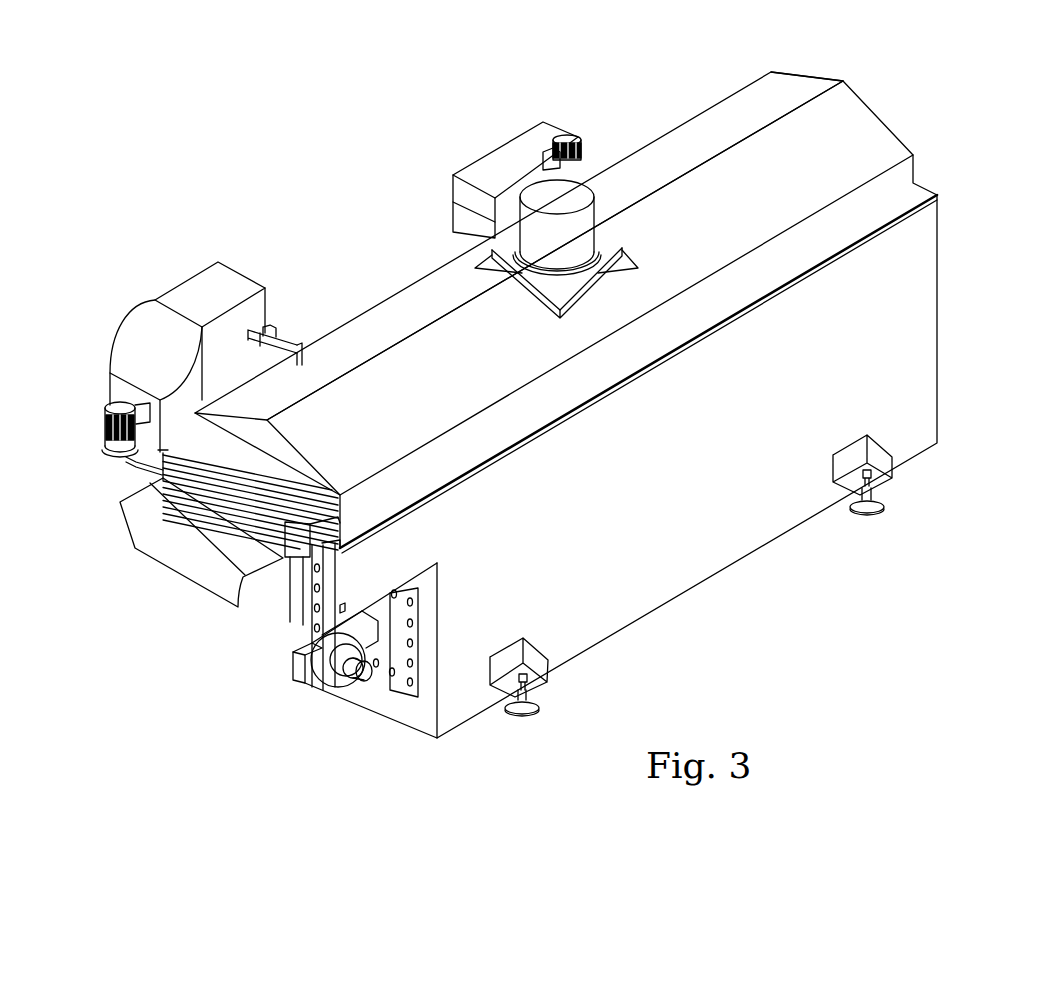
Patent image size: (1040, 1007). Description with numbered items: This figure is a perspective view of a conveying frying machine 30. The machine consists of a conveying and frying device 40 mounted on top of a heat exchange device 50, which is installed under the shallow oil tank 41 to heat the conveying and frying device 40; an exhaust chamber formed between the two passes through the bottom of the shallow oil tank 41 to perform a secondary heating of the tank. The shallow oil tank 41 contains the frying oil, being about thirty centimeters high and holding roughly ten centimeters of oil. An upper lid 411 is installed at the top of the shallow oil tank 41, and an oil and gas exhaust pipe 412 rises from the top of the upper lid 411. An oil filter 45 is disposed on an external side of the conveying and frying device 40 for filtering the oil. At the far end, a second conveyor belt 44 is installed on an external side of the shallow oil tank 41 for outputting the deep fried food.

The conveying frying machine 30 is at (407, 235).
The conveying and frying device 40 is at (918, 142).
The upper lid 411 is at (740, 108).
The oil and gas exhaust pipe 412 is at (578, 183).
The oil filter 45 is at (228, 280).
The shallow oil tank 41 is at (287, 567).
The second conveyor belt 44 is at (327, 510).
The heat exchange device 50 is at (907, 342).